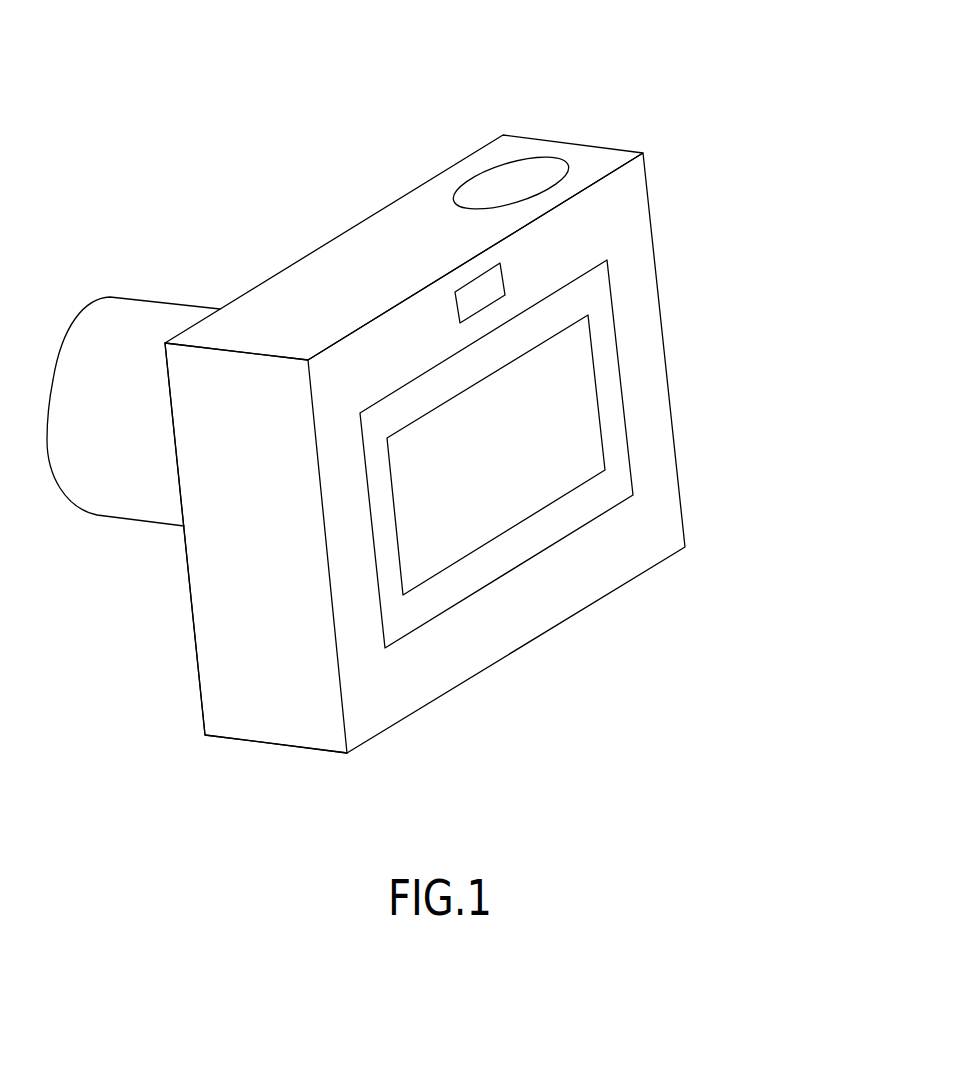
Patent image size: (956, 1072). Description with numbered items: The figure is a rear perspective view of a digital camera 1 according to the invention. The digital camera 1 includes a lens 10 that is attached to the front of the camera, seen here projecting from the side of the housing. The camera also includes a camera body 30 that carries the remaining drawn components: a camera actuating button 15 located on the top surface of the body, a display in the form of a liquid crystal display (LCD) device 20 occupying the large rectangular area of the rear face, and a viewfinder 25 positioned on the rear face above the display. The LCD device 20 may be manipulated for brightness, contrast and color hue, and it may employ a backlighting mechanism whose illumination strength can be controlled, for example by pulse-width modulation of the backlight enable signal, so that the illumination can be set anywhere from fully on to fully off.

The digital camera 1 is at (777, 185).
The lens 10 is at (180, 313).
The camera actuating button 15 is at (512, 190).
The liquid crystal display (LCD) device 20 is at (522, 503).
The viewfinder 25 is at (472, 290).
The camera body 30 is at (250, 648).